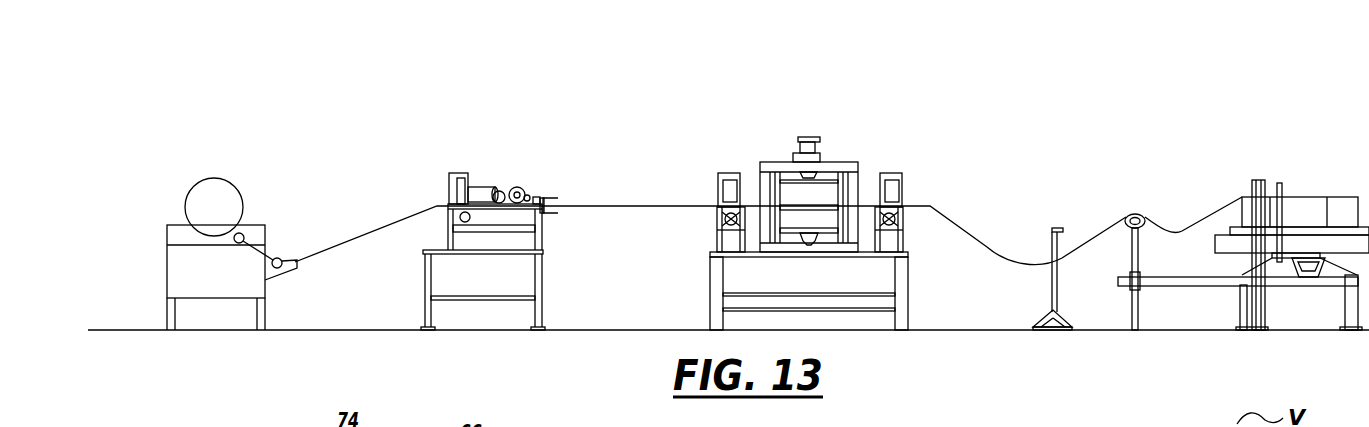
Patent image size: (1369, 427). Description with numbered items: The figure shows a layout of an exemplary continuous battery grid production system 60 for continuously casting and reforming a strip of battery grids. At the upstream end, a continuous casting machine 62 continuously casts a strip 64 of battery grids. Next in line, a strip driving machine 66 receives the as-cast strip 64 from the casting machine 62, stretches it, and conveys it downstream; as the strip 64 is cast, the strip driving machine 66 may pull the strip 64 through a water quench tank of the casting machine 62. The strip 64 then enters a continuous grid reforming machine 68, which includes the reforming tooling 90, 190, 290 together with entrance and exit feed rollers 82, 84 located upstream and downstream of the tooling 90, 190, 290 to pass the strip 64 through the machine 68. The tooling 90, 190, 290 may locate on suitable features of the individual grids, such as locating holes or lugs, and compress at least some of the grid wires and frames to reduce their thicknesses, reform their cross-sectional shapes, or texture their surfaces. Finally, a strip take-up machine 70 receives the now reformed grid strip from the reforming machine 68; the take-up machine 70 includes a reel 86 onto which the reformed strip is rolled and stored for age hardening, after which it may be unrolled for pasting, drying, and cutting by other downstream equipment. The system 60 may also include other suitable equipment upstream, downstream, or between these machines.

The continuous battery grid production system 60 is at (270, 98).
The continuous casting machine 62 is at (186, 150).
The strip 64 is at (358, 236).
The strip driving machine 66 is at (507, 150).
The continuous grid reforming machine 68 is at (818, 110).
The entrance feed roller 82 is at (722, 150).
The exit feed roller 84 is at (888, 145).
The strip take-up machine 70 is at (1290, 135).
The reel 86 is at (1307, 195).
The reforming tooling 90 is at (887, 269).
The reforming tooling 190 is at (887, 269).
The reforming tooling 290 is at (823, 187).